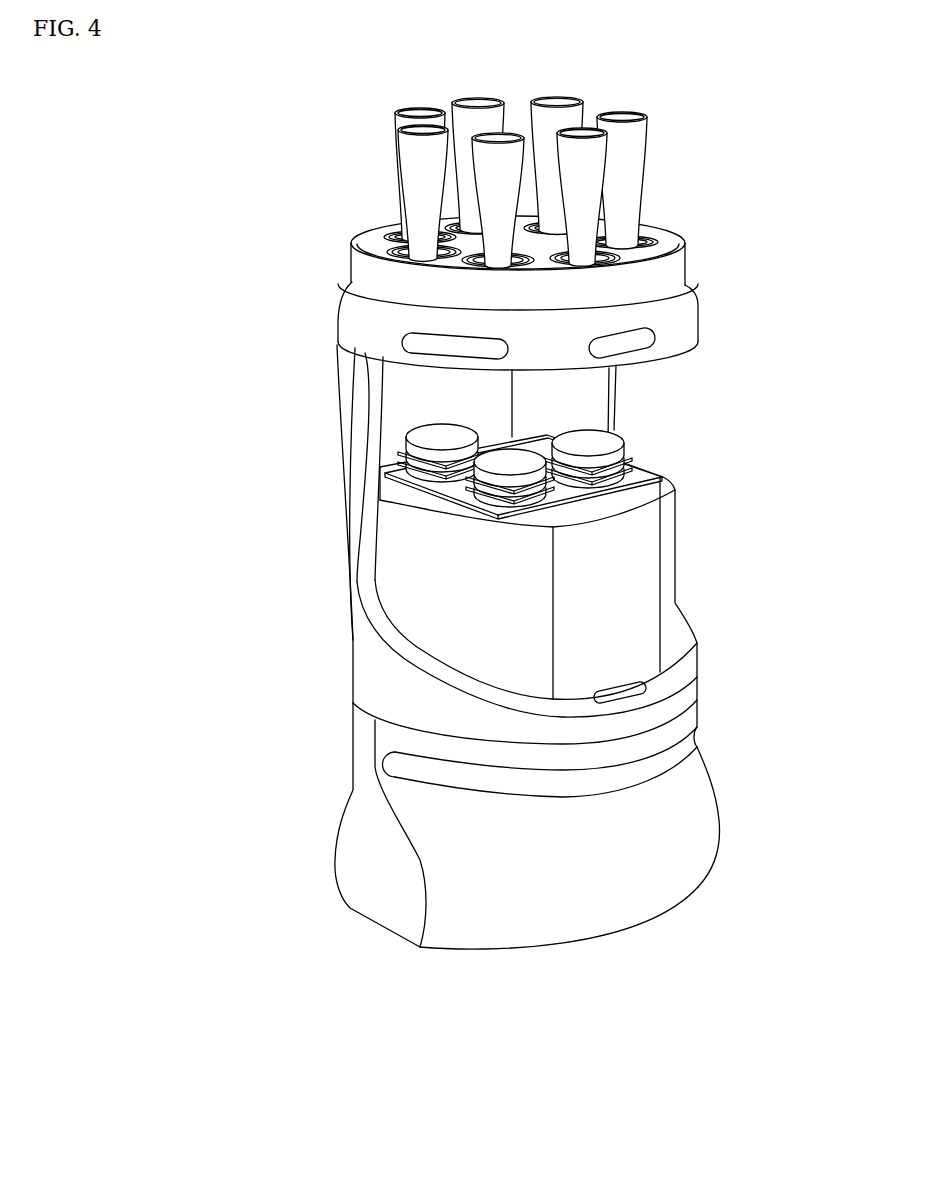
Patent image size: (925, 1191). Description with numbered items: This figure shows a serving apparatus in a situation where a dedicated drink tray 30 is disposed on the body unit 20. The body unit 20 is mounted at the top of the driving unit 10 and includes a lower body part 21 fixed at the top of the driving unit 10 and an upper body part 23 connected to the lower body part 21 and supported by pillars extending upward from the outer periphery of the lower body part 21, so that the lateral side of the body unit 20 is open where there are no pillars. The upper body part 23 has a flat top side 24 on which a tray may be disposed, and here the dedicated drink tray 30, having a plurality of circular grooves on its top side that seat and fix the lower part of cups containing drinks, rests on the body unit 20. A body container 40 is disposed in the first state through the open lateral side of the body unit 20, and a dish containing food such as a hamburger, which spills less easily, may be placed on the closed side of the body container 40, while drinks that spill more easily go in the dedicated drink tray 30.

The driving unit 10 is at (602, 903).
The body unit 20 is at (333, 495).
The lower body part 21 is at (378, 680).
The upper body part 23 is at (353, 322).
The top side 24 is at (387, 287).
The dedicated drink tray 30 is at (673, 268).
The body container 40 is at (637, 563).